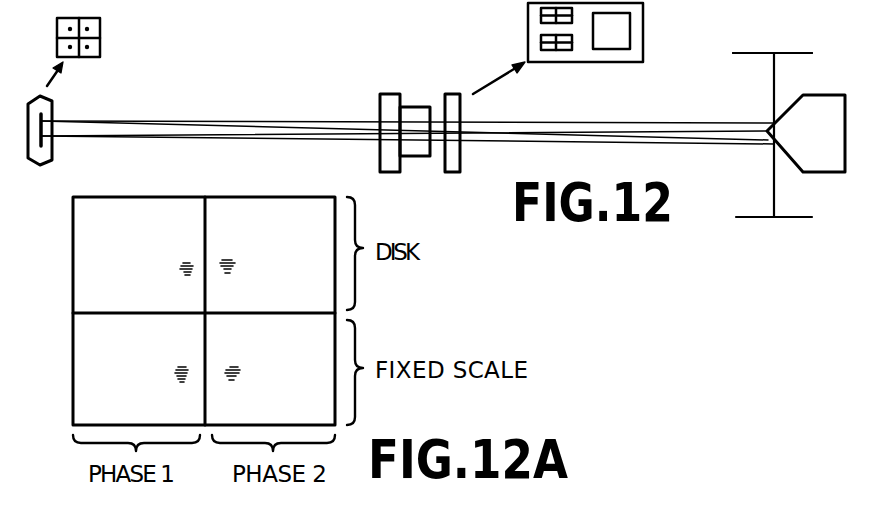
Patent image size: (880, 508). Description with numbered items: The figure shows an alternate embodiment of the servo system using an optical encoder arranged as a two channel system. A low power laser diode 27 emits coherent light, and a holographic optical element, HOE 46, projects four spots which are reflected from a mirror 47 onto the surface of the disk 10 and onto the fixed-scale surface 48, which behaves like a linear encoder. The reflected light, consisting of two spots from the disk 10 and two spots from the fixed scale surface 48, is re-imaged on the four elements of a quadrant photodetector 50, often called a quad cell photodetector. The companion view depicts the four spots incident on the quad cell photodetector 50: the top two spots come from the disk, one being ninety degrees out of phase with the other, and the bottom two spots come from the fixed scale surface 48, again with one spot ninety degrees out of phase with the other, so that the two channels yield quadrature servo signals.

The disk 10 is at (757, 216).
The laser diode 27 is at (384, 103).
The HOE 46 is at (452, 95).
The mirror 47 is at (833, 99).
The fixed-scale surface 48 is at (759, 55).
The quadrant photodetector 50 is at (48, 106).